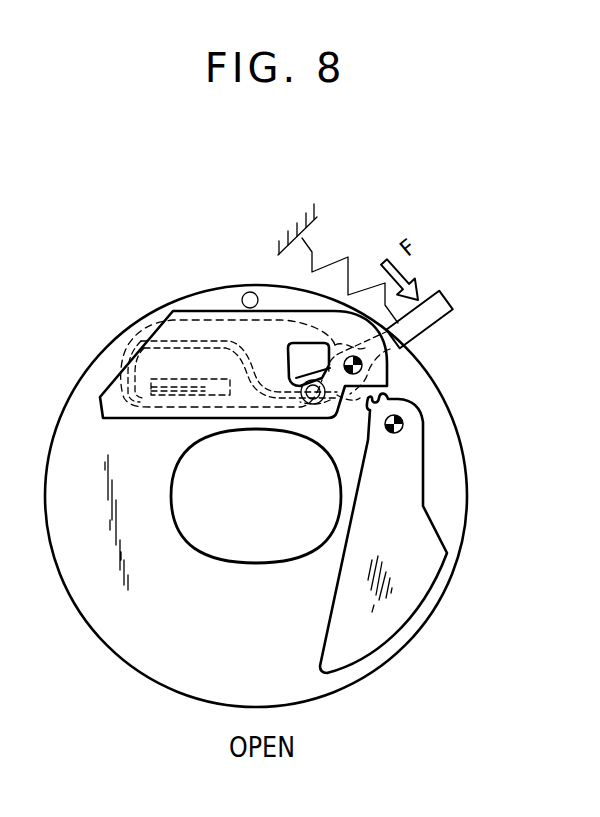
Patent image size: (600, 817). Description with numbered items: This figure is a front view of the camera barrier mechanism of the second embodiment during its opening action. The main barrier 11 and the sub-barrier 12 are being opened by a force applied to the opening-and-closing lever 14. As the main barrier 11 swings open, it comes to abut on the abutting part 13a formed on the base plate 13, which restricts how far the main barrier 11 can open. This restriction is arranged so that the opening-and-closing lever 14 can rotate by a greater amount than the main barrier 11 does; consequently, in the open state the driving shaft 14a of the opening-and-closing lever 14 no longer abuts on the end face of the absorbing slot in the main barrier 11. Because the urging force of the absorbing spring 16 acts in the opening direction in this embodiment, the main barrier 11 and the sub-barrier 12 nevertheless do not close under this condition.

The main barrier 11 is at (197, 323).
The sub-barrier 12 is at (417, 590).
The base plate 13 is at (413, 368).
The abutting part 13a is at (245, 292).
The opening-and-closing lever 14 is at (428, 313).
The driving shaft 14a is at (337, 388).
The absorbing spring 16 is at (150, 350).